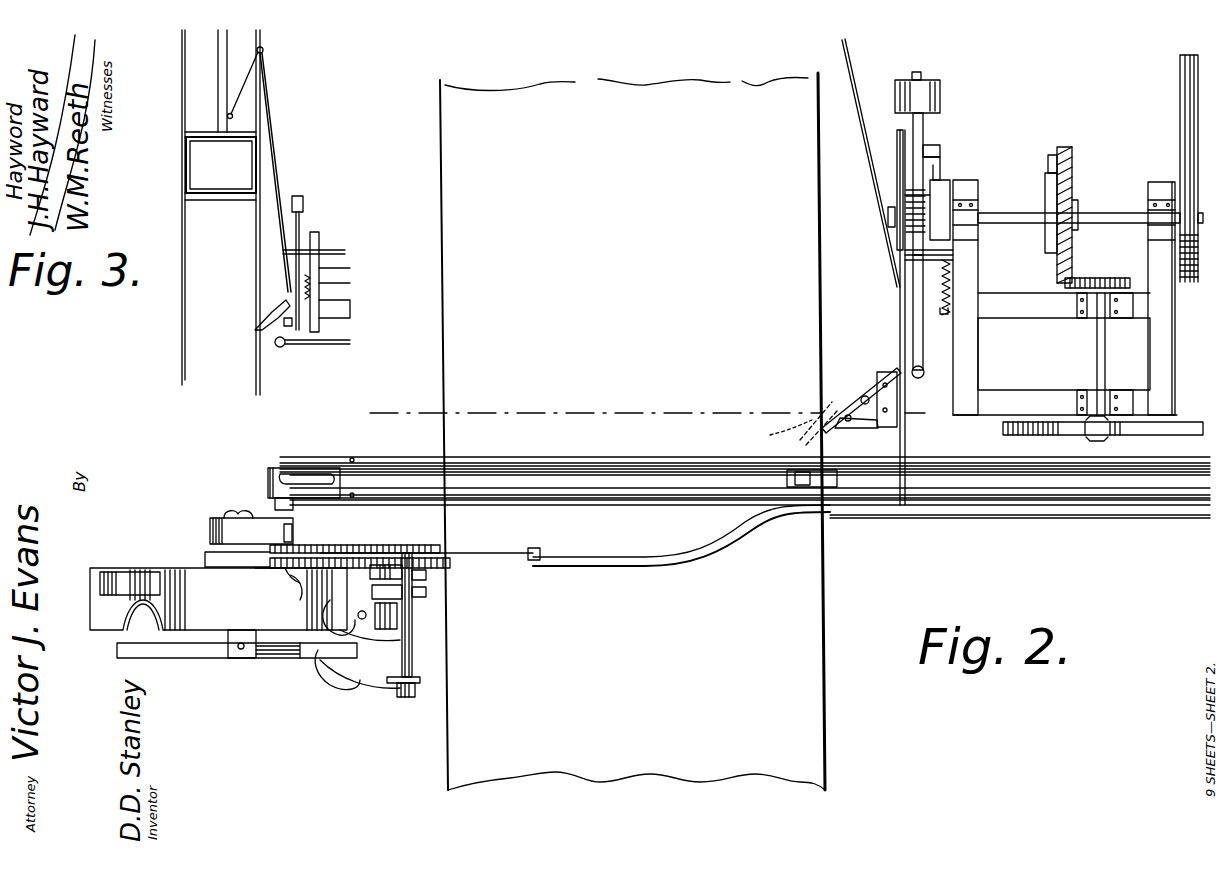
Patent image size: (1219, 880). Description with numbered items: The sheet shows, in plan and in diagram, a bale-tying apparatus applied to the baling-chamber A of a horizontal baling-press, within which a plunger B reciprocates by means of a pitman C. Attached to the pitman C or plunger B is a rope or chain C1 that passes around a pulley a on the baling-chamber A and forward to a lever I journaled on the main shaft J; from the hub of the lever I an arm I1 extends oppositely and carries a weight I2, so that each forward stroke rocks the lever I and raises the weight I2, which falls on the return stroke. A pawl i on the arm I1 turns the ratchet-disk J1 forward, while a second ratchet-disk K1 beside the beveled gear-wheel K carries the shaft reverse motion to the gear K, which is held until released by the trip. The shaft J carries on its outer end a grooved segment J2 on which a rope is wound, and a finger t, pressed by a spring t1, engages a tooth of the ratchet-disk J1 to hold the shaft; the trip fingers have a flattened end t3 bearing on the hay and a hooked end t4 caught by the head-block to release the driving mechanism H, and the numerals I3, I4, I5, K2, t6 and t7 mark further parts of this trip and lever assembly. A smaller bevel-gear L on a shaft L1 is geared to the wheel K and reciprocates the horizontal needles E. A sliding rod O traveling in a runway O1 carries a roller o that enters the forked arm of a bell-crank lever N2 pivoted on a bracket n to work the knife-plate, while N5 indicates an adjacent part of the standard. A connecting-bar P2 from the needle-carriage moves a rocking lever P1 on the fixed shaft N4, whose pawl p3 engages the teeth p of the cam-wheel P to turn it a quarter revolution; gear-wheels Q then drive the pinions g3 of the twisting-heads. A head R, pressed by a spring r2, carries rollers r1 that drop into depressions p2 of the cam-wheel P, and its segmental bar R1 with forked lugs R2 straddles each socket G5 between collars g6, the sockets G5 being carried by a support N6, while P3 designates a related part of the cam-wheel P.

In FIG. 3, the pitman C is at (202, 212).
In FIG. 3, the plunger B is at (221, 165).
In FIG. 3, the pulley a is at (264, 48).
In FIG. 3, the rope or chain C1 is at (281, 150).
In FIG. 2, the rope or chain C1 is at (855, 60).
In FIG. 3, the main shaft J is at (318, 254).
In FIG. 2, the main shaft J is at (1003, 213).
In FIG. 3, the driving mechanism H is at (311, 282).
In FIG. 2, the driving mechanism H is at (950, 184).
In FIG. 3, the horizontal needles E is at (330, 344).
In FIG. 3, the baling-chamber A is at (144, 208).
In FIG. 2, the baling-chamber A is at (362, 378).
In FIG. 2, the weight I2 is at (940, 93).
In FIG. 2, the arm I1 is at (924, 128).
In FIG. 2, the pawl i is at (940, 150).
In FIG. 2, the ratchet-disk J1 is at (905, 195).
In FIG. 2, the beveled gear-wheel K is at (1066, 150).
In FIG. 2, the ratchet-disk K1 is at (1047, 180).
In FIG. 2, the pawl K2 is at (1073, 182).
In FIG. 2, the grooved segment or wheel J2 is at (1178, 90).
In FIG. 2, the bevel-gear L is at (1100, 278).
In FIG. 2, the shaft L1 is at (1095, 340).
In FIG. 2, the finger t is at (905, 255).
In FIG. 2, the spring t1 is at (950, 290).
In FIG. 2, the lever I is at (913, 322).
In FIG. 2, the rod end I4 is at (924, 372).
In FIG. 2, the guide box I5 is at (877, 388).
In FIG. 2, the hooked end t4 is at (830, 395).
In FIG. 2, the flattened end t3 is at (799, 423).
In FIG. 2, the lever pivot t6 is at (900, 432).
In FIG. 2, the bracket I3 is at (905, 440).
In FIG. 2, the lever arm t7 is at (948, 440).
In FIG. 2, the sliding rod or bar O is at (985, 507).
In FIG. 2, the runway O1 is at (596, 492).
In FIG. 2, the roller o is at (792, 478).
In FIG. 2, the bell-crank lever N2 is at (262, 468).
In FIG. 2, the bracket n is at (275, 504).
In FIG. 2, the block N5 is at (212, 523).
In FIG. 2, the gear-wheels Q is at (370, 543).
In FIG. 2, the rocking lever P1 is at (318, 555).
In FIG. 2, the pinions g3 is at (440, 553).
In FIG. 2, the cam-wheel P is at (218, 599).
In FIG. 2, the arm P3 is at (275, 571).
In FIG. 2, the ratchet-shaped teeth p is at (300, 588).
In FIG. 2, the depressions p2 is at (92, 575).
In FIG. 2, the pawl p3 is at (95, 590).
In FIG. 2, the fixed shaft N4 is at (228, 648).
In FIG. 2, the head R is at (310, 667).
In FIG. 2, the spring r2 is at (372, 688).
In FIG. 2, the socket G5 is at (412, 660).
In FIG. 2, the support N6 is at (420, 681).
In FIG. 2, the collars g6 is at (426, 576).
In FIG. 2, the forked lug R2 is at (426, 592).
In FIG. 2, the segmental bar R1 is at (397, 615).
In FIG. 2, the rollers r1 is at (400, 640).
In FIG. 2, the connecting-bar P2 is at (670, 566).